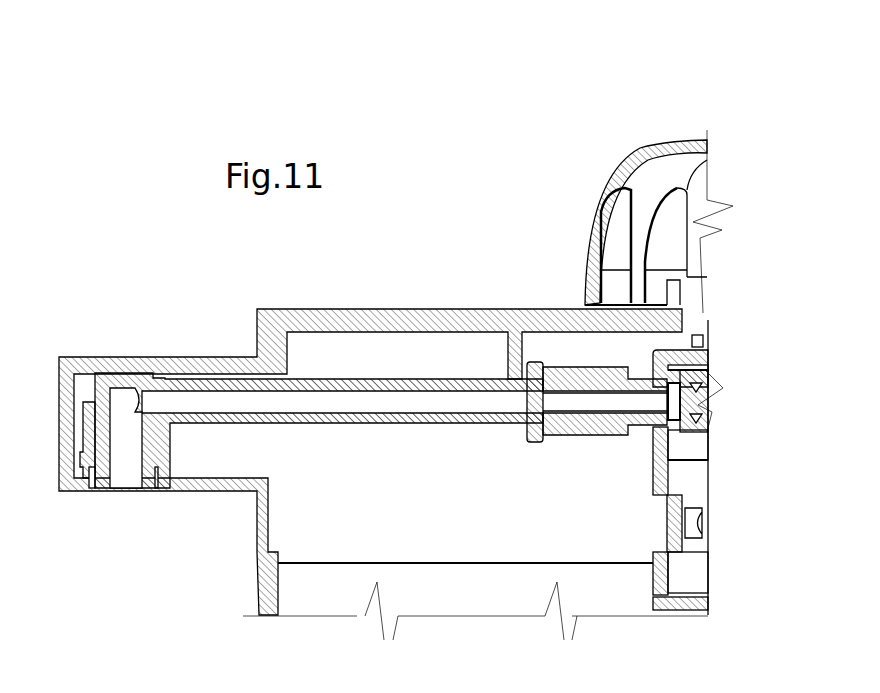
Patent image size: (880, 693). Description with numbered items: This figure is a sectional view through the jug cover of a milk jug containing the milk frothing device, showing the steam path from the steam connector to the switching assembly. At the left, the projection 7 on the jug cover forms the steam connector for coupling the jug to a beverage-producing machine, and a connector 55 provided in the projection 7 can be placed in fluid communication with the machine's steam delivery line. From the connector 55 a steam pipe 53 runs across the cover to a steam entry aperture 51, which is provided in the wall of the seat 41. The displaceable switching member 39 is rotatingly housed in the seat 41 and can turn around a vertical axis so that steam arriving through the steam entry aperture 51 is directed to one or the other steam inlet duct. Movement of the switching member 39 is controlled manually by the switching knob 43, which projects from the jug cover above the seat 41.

The projection 7 is at (119, 368).
The switching member 39 is at (708, 384).
The seat 41 is at (654, 445).
The switching knob 43 is at (602, 195).
The steam entry aperture 51 is at (666, 402).
The steam pipe 53 is at (388, 413).
The connector 55 is at (126, 474).